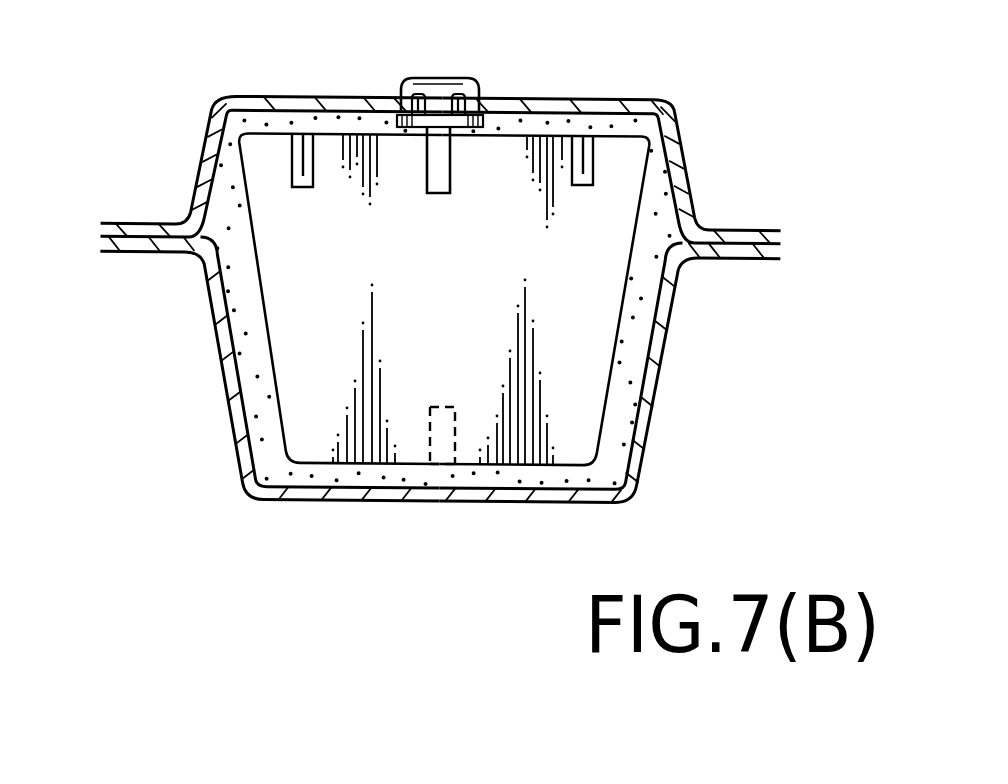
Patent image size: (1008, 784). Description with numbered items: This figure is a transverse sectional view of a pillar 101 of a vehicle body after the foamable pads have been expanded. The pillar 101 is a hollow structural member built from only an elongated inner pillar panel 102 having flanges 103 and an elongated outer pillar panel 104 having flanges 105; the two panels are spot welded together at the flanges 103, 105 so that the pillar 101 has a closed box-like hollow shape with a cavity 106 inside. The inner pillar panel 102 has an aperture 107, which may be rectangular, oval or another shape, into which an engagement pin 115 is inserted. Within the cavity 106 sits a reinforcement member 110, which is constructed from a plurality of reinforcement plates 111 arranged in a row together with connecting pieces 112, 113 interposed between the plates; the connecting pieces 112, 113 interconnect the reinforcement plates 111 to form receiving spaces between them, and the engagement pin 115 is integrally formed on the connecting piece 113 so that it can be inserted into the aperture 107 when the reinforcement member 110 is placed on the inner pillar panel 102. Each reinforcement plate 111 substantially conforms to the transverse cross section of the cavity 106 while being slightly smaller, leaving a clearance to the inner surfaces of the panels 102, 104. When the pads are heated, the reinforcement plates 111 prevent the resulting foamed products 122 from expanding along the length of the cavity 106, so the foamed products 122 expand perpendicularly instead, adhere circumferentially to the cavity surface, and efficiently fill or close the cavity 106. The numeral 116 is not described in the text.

The pillar 101 is at (190, 160).
The inner pillar panel 102 is at (598, 98).
The flanges 103 is at (140, 229).
The outer pillar panel 104 is at (548, 502).
The flanges 105 is at (138, 249).
The cavity 106 is at (618, 359).
The aperture 107 is at (455, 123).
The reinforcement member 110 is at (447, 465).
The reinforcement plates 111 is at (362, 435).
The connecting pieces 112 is at (302, 188).
The connecting piece 113 is at (442, 178).
The engagement pin 115 is at (452, 71).
The clip prongs 116 is at (413, 128).
The foamed products 122 is at (252, 365).